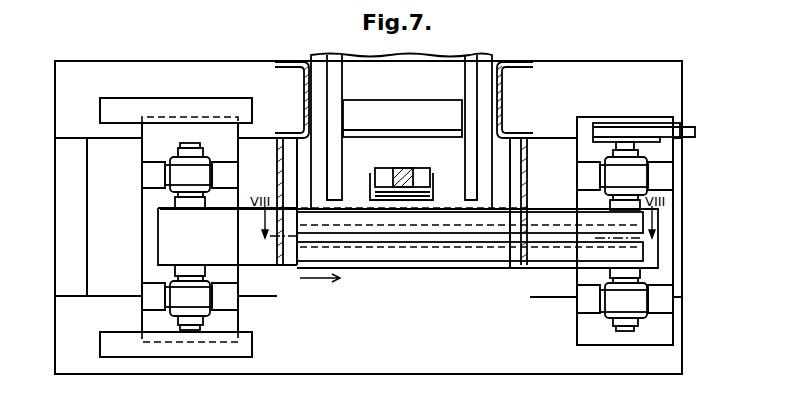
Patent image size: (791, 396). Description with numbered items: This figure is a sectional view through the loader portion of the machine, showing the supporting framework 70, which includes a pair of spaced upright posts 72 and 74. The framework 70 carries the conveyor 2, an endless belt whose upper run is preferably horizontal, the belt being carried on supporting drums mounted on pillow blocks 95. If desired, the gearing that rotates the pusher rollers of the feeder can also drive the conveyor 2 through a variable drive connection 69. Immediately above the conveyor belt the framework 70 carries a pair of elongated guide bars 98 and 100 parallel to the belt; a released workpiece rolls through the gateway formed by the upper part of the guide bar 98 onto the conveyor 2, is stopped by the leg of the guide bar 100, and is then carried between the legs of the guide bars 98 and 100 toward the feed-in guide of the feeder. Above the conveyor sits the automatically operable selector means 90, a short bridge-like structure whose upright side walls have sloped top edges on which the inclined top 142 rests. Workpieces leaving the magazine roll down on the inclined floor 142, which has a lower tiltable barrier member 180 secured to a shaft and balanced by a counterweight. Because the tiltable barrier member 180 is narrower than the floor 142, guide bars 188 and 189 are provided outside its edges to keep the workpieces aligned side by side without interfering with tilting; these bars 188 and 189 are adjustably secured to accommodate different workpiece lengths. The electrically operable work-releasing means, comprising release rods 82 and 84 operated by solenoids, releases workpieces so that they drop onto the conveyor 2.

The conveyor 2 is at (262, 266).
The variable drive connection 69 is at (690, 129).
The supporting framework 70 is at (58, 312).
The upright post 72 is at (303, 84).
The upright post 74 is at (499, 84).
The release rod 82 is at (425, 170).
The release rod 84 is at (433, 195).
The selector means 90 is at (425, 95).
The pillow blocks 95 is at (172, 172).
The guide bar 98 is at (570, 206).
The guide bar 100 is at (568, 262).
The top 142 is at (407, 60).
The tiltable barrier member 180 is at (386, 133).
The guide bar 188 is at (342, 160).
The guide bar 189 is at (465, 148).